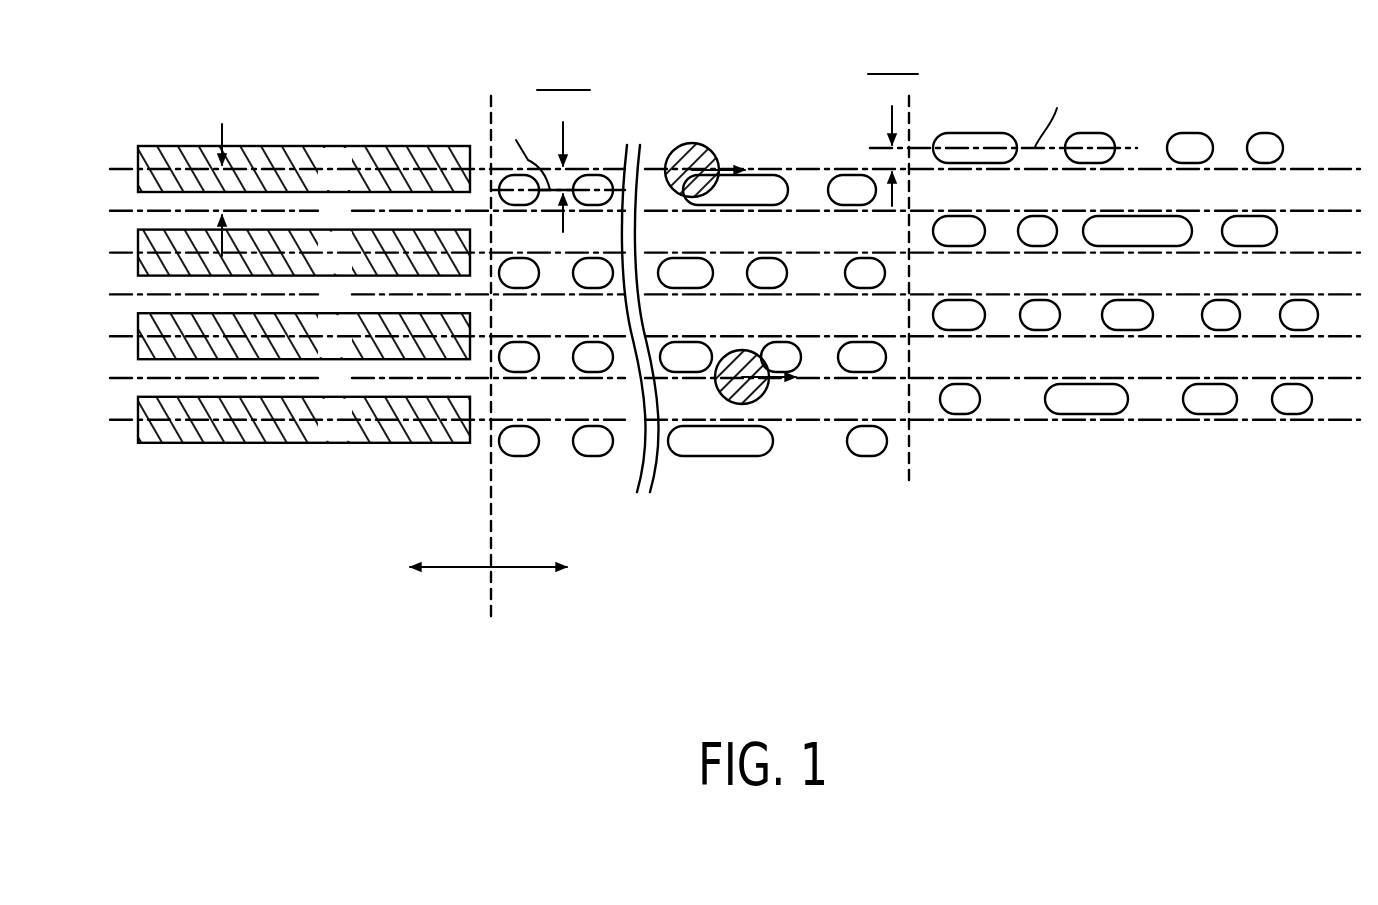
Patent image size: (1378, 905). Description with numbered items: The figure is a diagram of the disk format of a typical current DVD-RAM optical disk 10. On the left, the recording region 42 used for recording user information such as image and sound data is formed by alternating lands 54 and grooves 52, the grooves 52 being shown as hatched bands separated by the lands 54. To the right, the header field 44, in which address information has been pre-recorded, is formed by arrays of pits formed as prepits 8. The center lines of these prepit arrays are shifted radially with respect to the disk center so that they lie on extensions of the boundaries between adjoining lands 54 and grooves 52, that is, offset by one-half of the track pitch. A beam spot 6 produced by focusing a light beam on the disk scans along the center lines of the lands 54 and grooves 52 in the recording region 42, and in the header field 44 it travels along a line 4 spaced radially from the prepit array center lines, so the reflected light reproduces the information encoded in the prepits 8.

The optical disk 10 is at (1002, 270).
The line 4 is at (1318, 166).
The beam spot 6 is at (702, 143).
The prepits 8 is at (961, 416).
The recording region 42 is at (367, 354).
The header field 44 is at (707, 512).
The groove 52 is at (322, 184).
The land 54 is at (322, 226).